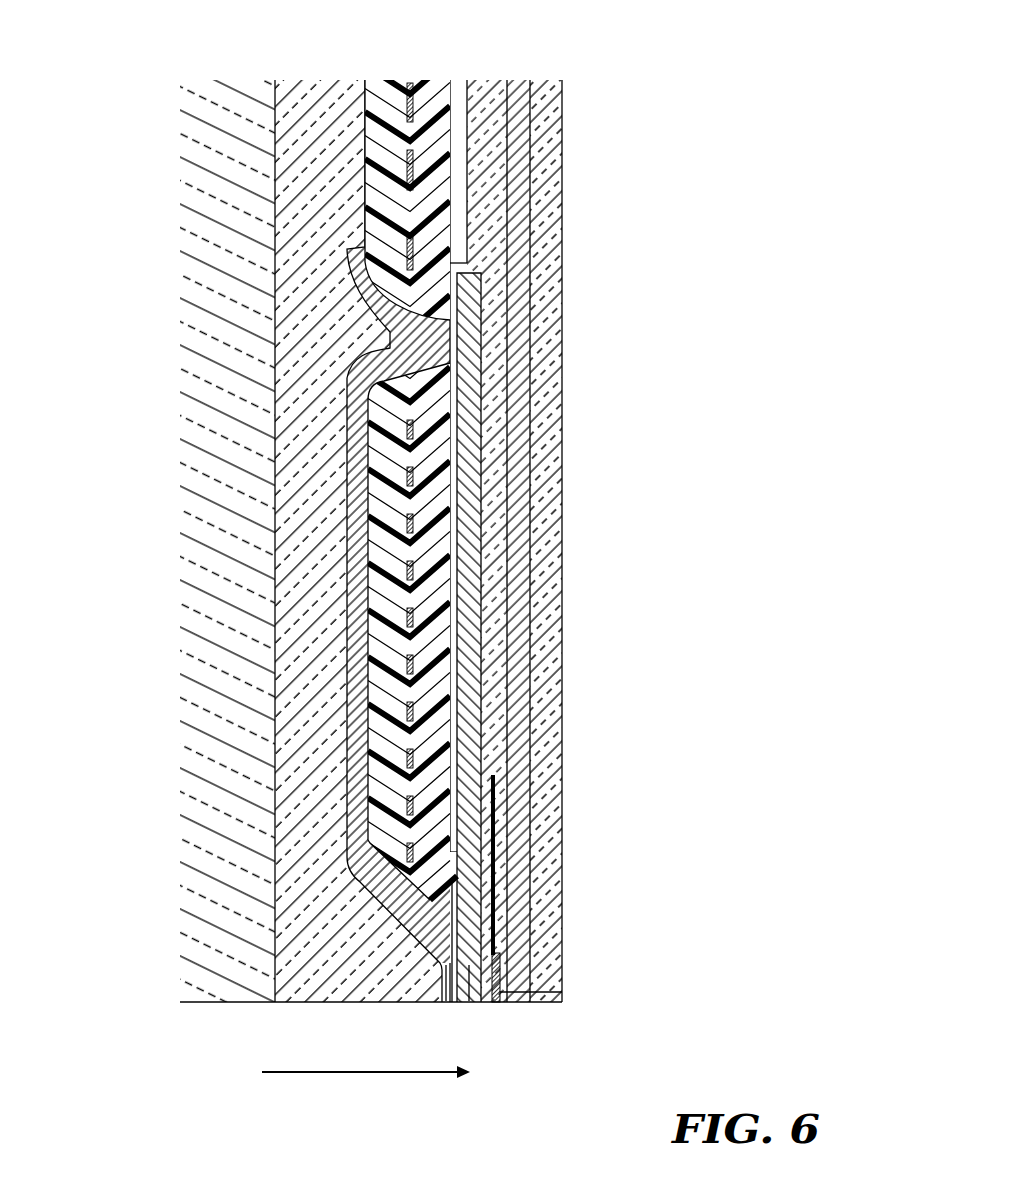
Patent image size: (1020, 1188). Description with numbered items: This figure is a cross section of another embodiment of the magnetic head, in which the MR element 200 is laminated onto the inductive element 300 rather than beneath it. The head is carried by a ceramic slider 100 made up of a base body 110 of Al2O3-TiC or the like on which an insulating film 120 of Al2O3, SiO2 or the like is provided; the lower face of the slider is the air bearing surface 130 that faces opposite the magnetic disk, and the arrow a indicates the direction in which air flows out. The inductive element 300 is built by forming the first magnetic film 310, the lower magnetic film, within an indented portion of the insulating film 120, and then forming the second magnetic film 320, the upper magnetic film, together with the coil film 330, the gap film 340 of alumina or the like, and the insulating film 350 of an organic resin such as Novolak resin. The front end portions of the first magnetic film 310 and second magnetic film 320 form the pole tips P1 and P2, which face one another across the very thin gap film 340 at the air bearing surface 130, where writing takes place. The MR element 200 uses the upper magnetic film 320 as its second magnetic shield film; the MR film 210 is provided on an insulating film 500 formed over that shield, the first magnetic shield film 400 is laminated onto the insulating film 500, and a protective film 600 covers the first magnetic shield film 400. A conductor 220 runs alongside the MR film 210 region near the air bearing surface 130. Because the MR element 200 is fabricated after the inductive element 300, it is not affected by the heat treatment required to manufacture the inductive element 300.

The slider 100 is at (144, 103).
The base body 110 is at (218, 104).
The insulating film 120 is at (319, 100).
The air bearing surface (ABS surface) 130 is at (545, 1012).
The MR element 200 is at (500, 952).
The MR film 210 is at (545, 990).
The conductor line 220 is at (498, 800).
The inductive element 300 is at (360, 906).
The first magnetic film (lower magnetic film) 310 is at (365, 522).
The second magnetic film (upper magnetic film) 320 is at (470, 452).
The coil film 330 is at (410, 765).
The gap film 340 is at (458, 392).
The insulating film 350 is at (392, 680).
The first magnetic shield film 400 is at (518, 648).
The insulating film 500 is at (494, 97).
The protective film 600 is at (540, 289).
The pole tip P1 is at (447, 1003).
The pole tip P2 is at (471, 1003).
The arrow (direction of air flow) a is at (366, 1056).